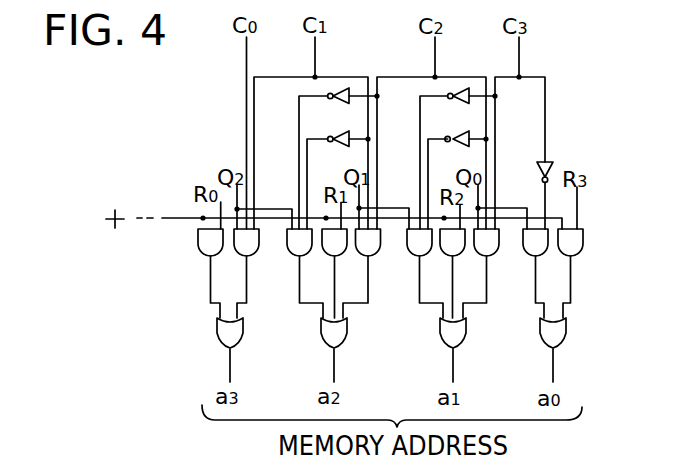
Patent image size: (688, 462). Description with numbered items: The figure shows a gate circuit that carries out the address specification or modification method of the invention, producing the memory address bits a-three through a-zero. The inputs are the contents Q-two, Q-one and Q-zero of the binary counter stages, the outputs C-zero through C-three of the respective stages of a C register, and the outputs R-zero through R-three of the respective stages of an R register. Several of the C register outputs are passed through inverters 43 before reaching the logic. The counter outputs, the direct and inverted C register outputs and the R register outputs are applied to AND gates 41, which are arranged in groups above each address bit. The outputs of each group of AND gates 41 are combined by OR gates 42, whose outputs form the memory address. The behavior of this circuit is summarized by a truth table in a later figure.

The AND gates 41 is at (382, 273).
The OR gates 42 is at (370, 350).
The inverters 43 is at (426, 136).